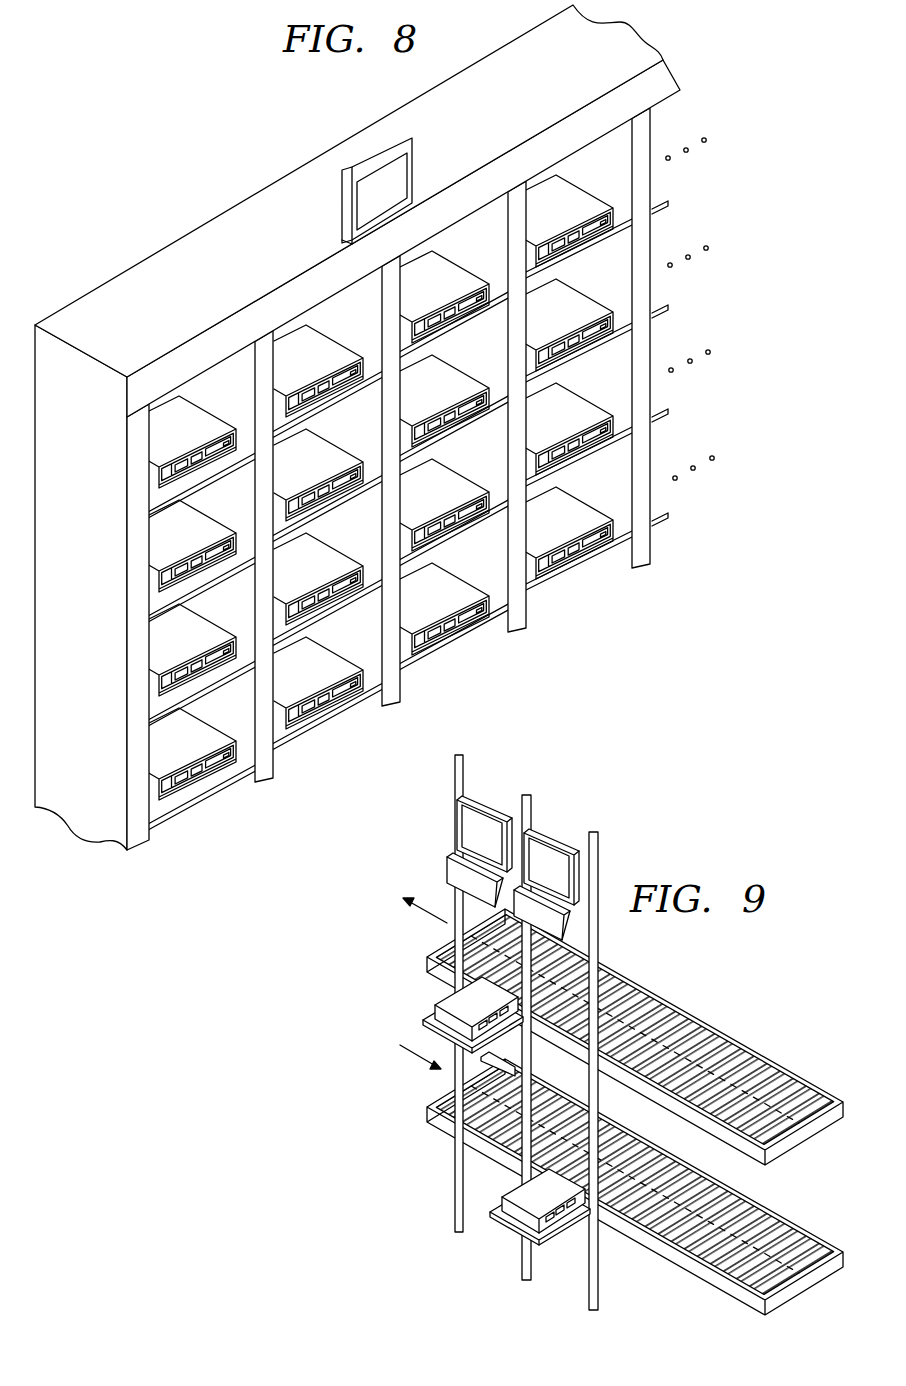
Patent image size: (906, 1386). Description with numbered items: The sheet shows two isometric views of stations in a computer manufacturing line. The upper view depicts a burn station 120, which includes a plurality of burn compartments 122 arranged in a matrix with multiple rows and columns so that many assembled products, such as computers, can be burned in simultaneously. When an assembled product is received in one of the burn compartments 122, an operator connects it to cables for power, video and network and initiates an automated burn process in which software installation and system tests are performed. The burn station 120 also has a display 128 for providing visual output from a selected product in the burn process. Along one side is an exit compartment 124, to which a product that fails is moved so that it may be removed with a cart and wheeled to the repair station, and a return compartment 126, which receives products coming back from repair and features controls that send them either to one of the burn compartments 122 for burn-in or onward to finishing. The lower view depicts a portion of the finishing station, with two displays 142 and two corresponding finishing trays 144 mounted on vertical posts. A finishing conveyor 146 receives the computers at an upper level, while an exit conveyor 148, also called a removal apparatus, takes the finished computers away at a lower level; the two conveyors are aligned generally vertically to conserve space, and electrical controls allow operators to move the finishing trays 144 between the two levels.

In FIG. 8, the burn station 120 is at (275, 121).
In FIG. 8, the burn compartment 122 is at (149, 502).
In FIG. 8, the exit compartment 124 is at (627, 562).
In FIG. 8, the return compartment 126 is at (496, 636).
In FIG. 8, the display 128 is at (414, 170).
In FIG. 9, the display 142 is at (500, 790).
In FIG. 9, the finishing tray 144 is at (428, 1018).
In FIG. 9, the finishing conveyor 146 is at (667, 1000).
In FIG. 9, the exit conveyor 148 is at (790, 1216).